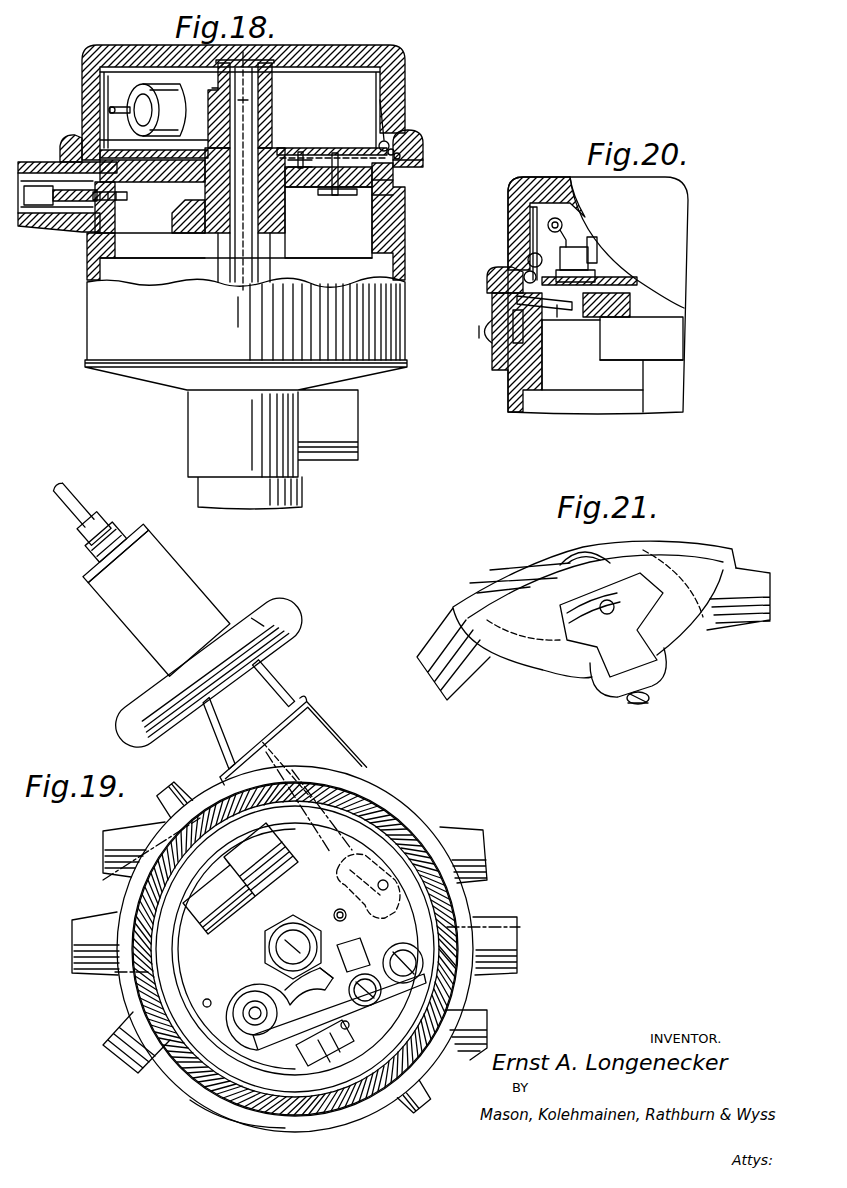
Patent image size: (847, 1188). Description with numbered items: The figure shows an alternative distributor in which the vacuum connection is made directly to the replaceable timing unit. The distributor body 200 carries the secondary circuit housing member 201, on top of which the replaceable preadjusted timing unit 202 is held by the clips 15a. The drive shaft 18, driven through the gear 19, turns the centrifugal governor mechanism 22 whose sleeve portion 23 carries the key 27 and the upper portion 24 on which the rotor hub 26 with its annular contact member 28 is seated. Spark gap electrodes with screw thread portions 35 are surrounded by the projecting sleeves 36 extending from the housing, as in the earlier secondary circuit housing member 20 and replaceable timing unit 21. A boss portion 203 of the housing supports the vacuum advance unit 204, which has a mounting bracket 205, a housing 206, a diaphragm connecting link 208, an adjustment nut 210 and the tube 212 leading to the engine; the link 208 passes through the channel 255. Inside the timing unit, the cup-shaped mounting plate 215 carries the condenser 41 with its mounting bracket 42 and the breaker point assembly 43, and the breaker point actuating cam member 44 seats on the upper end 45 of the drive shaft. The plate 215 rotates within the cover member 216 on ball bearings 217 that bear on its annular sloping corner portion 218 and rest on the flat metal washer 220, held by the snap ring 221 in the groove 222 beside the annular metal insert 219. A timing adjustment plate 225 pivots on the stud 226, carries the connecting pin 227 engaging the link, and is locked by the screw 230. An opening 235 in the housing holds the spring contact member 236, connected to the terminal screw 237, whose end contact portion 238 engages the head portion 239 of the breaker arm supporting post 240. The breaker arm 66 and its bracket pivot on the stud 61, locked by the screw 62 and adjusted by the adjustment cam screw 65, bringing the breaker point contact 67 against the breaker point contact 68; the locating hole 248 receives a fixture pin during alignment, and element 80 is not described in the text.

In FIG. 18, the distributor body 200 is at (78, 332).
In FIG. 18, the secondary circuit housing member 201 is at (405, 224).
In FIG. 20, the secondary circuit housing member 201 is at (489, 371).
In FIG. 21, the secondary circuit housing member 201 is at (691, 647).
In FIG. 18, the replaceable preadjusted timing unit 202 is at (416, 104).
In FIG. 20, the replaceable preadjusted timing unit 202 is at (700, 212).
In FIG. 19, the boss portion 203 is at (357, 766).
In FIG. 19, the vacuum advance unit 204 is at (292, 627).
In FIG. 19, the mounting bracket 205 is at (277, 698).
In FIG. 19, the housing 206 is at (262, 615).
In FIG. 18, the diaphragm connecting link 208 is at (328, 222).
In FIG. 19, the diaphragm connecting link 208 is at (263, 757).
In FIG. 19, the adjustment nut 210 is at (128, 543).
In FIG. 19, the tube 212 is at (78, 497).
In FIG. 18, the mounting plate 215 is at (323, 148).
In FIG. 20, the mounting plate 215 is at (605, 281).
In FIG. 19, the mounting plate 215 is at (285, 1120).
In FIG. 18, the cover member 216 is at (358, 48).
In FIG. 18, the ball bearings 217 is at (80, 134).
In FIG. 20, the ball bearings 217 is at (515, 268).
In FIG. 18, the annular sloping corner portion 218 is at (382, 143).
In FIG. 20, the annular sloping corner portion 218 is at (528, 258).
In FIG. 18, the annular metal insert 219 is at (386, 143).
In FIG. 18, the flat metal washer 220 is at (420, 157).
In FIG. 18, the snap ring 221 is at (405, 182).
In FIG. 18, the groove 222 is at (417, 167).
In FIG. 19, the timing adjustment plate 225 is at (360, 905).
In FIG. 18, the stud 226 is at (300, 152).
In FIG. 19, the stud 226 is at (337, 911).
In FIG. 18, the connecting pin 227 is at (335, 197).
In FIG. 19, the screw 230 is at (365, 855).
In FIG. 20, the opening 235 is at (587, 313).
In FIG. 21, the opening 235 is at (663, 617).
In FIG. 20, the spring contact member 236 is at (517, 300).
In FIG. 21, the spring contact member 236 is at (610, 645).
In FIG. 20, the terminal screw 237 is at (478, 337).
In FIG. 21, the terminal screw 237 is at (633, 705).
In FIG. 20, the end contact portion 238 is at (570, 307).
In FIG. 21, the end contact portion 238 is at (580, 615).
In FIG. 20, the head portion 239 is at (557, 305).
In FIG. 21, the head portion 239 is at (623, 597).
In FIG. 20, the breaker arm supporting post 240 is at (575, 243).
In FIG. 19, the locating hole 248 is at (209, 999).
In FIG. 18, the channel 255 is at (405, 195).
In FIG. 19, the clips 15a is at (172, 802).
In FIG. 19, the drive shaft 18 is at (67, 945).
In FIG. 18, the gear 19 is at (55, 73).
In FIG. 19, the secondary circuit housing member 20 is at (311, 1027).
In FIG. 20, the replaceable timing unit 21 is at (481, 296).
In FIG. 19, the centrifugal governor mechanism 22 is at (31, 476).
In FIG. 18, the sleeve portion 23 is at (272, 268).
In FIG. 20, the sleeve portion 23 is at (670, 389).
In FIG. 18, the upper portion 24 is at (246, 210).
In FIG. 18, the rotor hub 26 is at (192, 233).
In FIG. 20, the rotor hub 26 is at (670, 350).
In FIG. 18, the key 27 is at (218, 258).
In FIG. 18, the annular contact member 28 is at (173, 216).
In FIG. 18, the screw thread portions 35 is at (53, 196).
In FIG. 18, the projecting sleeves 36 is at (33, 162).
In FIG. 21, the projecting sleeves 36 is at (747, 580).
In FIG. 19, the projecting sleeves 36 is at (90, 927).
In FIG. 18, the condenser 41 is at (147, 110).
In FIG. 19, the condenser 41 is at (293, 873).
In FIG. 19, the mounting bracket 42 is at (240, 878).
In FIG. 19, the breaker point assembly 43 is at (376, 1009).
In FIG. 18, the breaker point actuating cam member 44 is at (272, 100).
In FIG. 19, the breaker point actuating cam member 44 is at (265, 941).
In FIG. 18, the upper end 45 is at (250, 106).
In FIG. 19, the upper end 45 is at (286, 940).
In FIG. 19, the stud 61 is at (254, 1001).
In FIG. 19, the screw 62 is at (423, 980).
In FIG. 19, the adjustment cam screw 65 is at (339, 1012).
In FIG. 19, the breaker arm 66 is at (279, 1014).
In FIG. 19, the breaker point contact 67 is at (355, 968).
In FIG. 19, the breaker point contact 68 is at (349, 948).
In FIG. 18, the pin 80 is at (127, 197).